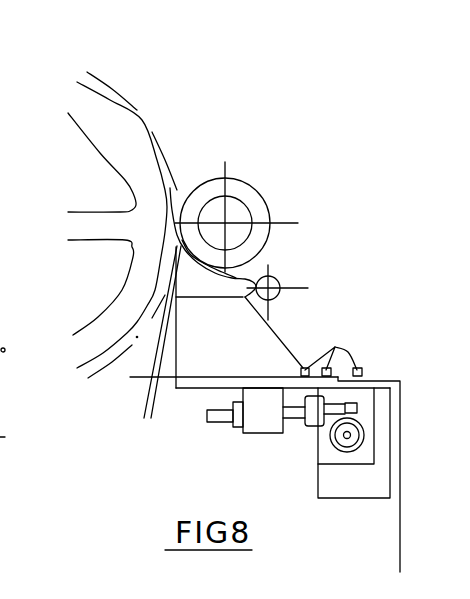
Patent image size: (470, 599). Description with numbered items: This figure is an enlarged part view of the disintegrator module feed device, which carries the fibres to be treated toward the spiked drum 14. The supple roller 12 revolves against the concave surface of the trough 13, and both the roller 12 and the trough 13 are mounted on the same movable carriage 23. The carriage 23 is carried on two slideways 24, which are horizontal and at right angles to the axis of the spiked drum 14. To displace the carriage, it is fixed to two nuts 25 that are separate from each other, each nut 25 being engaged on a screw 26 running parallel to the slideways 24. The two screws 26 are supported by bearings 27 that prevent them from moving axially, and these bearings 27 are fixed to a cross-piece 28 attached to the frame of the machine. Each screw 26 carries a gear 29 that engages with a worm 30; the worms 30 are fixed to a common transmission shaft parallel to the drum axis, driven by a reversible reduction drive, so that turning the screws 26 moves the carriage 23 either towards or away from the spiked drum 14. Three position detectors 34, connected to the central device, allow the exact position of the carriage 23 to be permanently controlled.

The supple roller 12 is at (250, 188).
The trough 13 is at (174, 208).
The spiked drum 14 is at (128, 135).
The movable carriage 23 is at (233, 353).
The slideways 24 is at (193, 386).
The nuts 25 is at (252, 421).
The screw 26 is at (297, 420).
The bearings 27 is at (313, 423).
The cross-piece 28 is at (375, 447).
The gear 29 is at (357, 404).
The worm 30 is at (350, 448).
The position detectors 34 is at (334, 348).